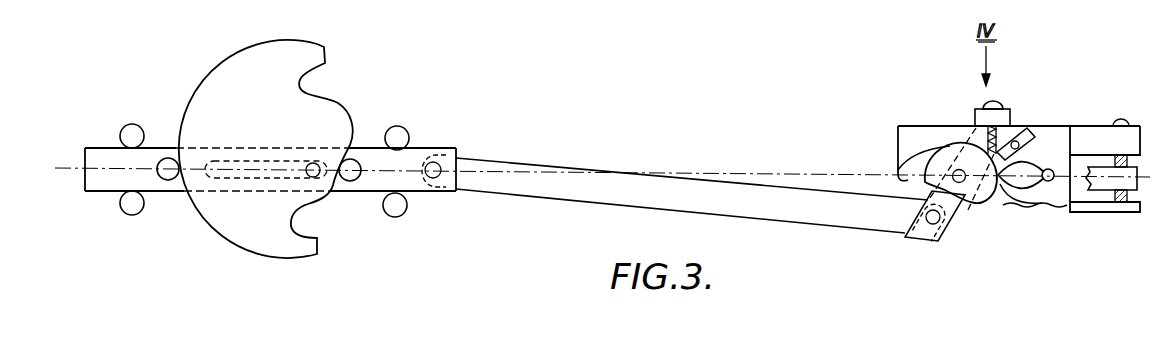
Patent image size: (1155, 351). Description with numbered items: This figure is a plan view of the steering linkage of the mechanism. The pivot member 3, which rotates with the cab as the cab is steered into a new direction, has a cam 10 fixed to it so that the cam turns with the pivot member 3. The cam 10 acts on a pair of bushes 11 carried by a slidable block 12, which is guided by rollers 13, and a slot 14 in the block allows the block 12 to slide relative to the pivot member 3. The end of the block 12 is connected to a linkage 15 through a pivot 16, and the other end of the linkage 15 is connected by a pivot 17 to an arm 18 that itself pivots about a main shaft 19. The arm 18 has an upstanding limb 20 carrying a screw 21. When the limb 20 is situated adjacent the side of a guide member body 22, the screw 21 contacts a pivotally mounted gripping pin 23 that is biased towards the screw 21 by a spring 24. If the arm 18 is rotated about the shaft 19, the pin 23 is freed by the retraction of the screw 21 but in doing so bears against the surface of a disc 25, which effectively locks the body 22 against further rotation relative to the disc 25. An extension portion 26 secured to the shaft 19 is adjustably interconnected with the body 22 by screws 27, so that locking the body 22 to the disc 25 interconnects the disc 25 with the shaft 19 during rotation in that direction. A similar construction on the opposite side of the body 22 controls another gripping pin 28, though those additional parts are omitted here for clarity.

The pivot member 3 is at (313, 163).
The cam 10 is at (232, 76).
The bushes 11 is at (167, 158).
The slidable block 12 is at (108, 150).
The rollers 13 is at (134, 214).
The slot 14 is at (246, 180).
The linkage 15 is at (620, 198).
The pivot 16 is at (437, 163).
The pivot 17 is at (938, 228).
The arm 18 is at (923, 241).
The main shaft 19 is at (899, 153).
The upstanding limb 20 is at (983, 113).
The screw 21 is at (1004, 103).
The guide member body 22 is at (903, 131).
The gripping pin 23 is at (1023, 140).
The spring 24 is at (1033, 206).
The disc 25 is at (948, 148).
The extension portion 26 is at (1108, 183).
The screws 27 is at (1120, 118).
The gripping pin 28 is at (1008, 206).